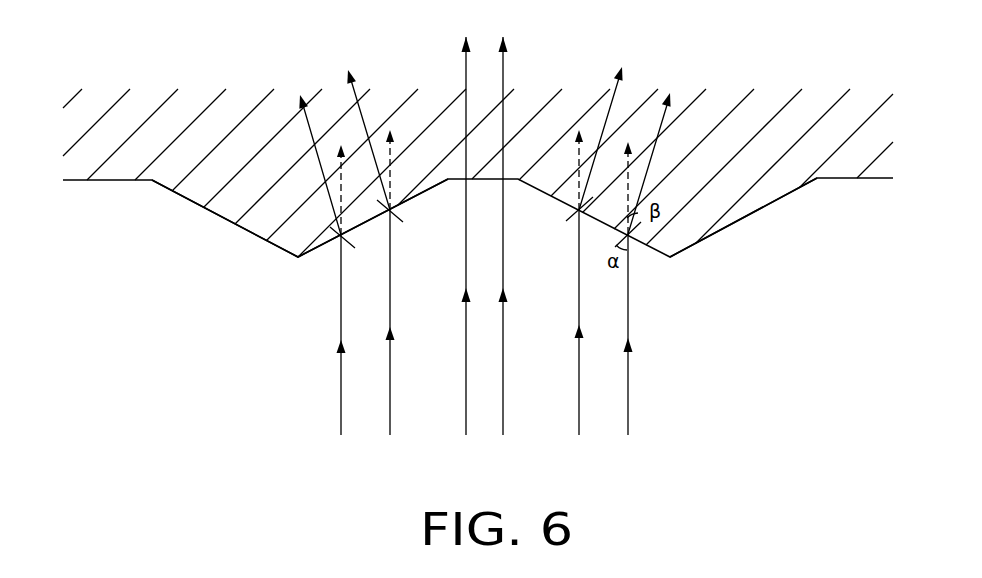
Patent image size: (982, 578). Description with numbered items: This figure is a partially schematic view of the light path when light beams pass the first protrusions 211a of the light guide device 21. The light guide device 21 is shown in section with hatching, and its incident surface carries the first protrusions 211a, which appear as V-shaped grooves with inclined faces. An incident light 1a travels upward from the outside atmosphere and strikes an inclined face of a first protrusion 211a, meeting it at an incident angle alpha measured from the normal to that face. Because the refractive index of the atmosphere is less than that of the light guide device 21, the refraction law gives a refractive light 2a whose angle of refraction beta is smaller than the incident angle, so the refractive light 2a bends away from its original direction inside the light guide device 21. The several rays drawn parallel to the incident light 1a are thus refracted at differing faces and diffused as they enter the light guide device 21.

The refractive light 2a is at (663, 127).
The light guide device 21 is at (210, 231).
The first protrusions 211a is at (745, 203).
The incident light 1a is at (628, 319).